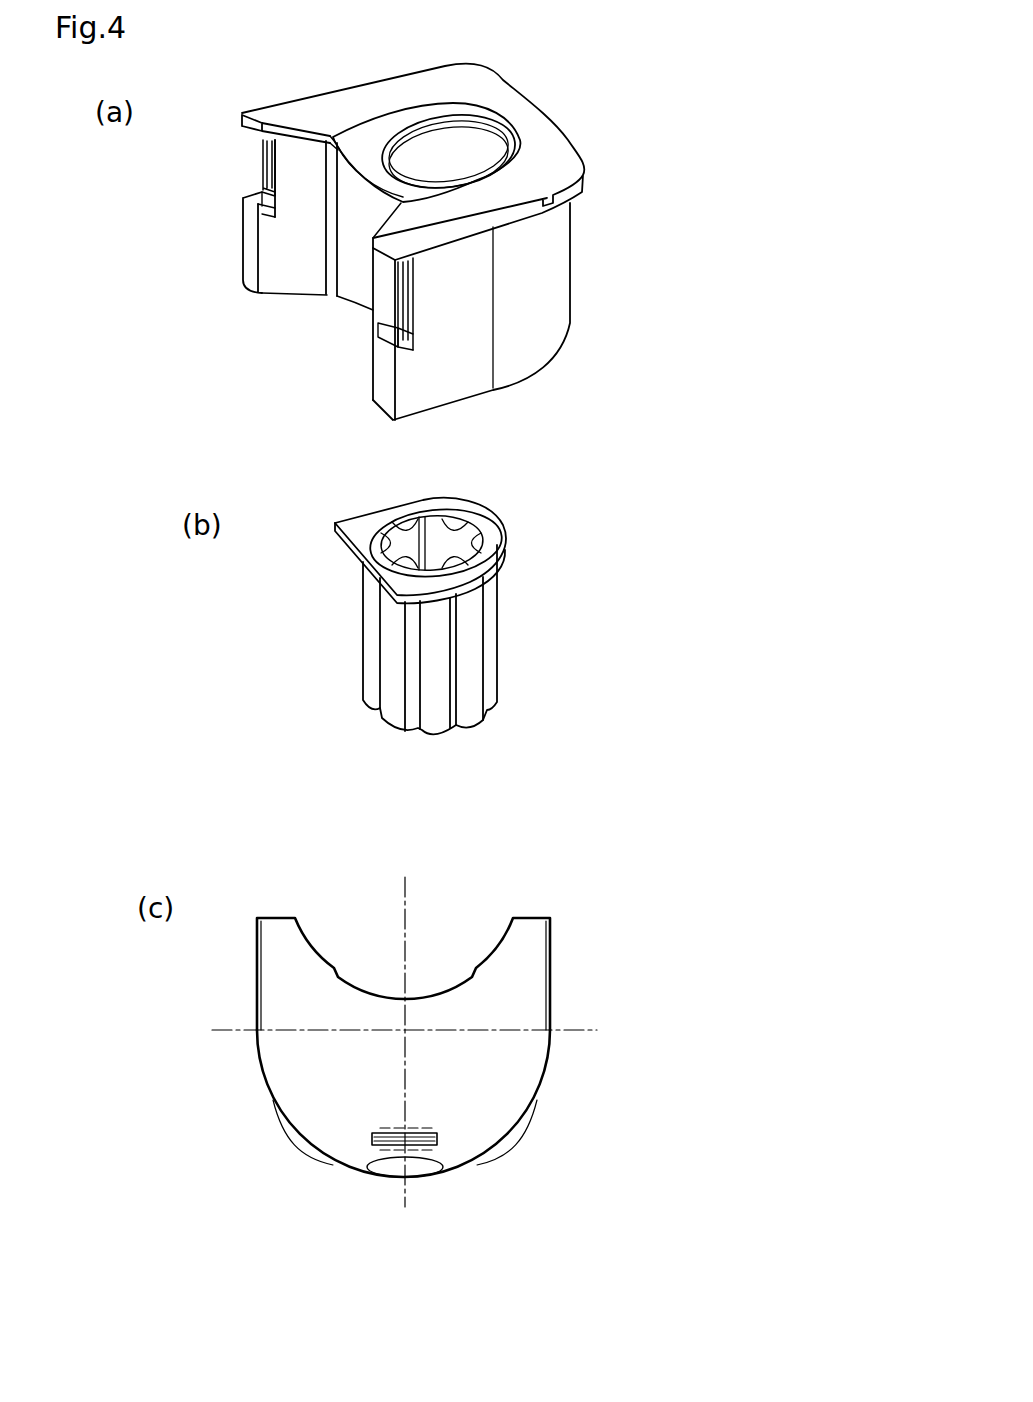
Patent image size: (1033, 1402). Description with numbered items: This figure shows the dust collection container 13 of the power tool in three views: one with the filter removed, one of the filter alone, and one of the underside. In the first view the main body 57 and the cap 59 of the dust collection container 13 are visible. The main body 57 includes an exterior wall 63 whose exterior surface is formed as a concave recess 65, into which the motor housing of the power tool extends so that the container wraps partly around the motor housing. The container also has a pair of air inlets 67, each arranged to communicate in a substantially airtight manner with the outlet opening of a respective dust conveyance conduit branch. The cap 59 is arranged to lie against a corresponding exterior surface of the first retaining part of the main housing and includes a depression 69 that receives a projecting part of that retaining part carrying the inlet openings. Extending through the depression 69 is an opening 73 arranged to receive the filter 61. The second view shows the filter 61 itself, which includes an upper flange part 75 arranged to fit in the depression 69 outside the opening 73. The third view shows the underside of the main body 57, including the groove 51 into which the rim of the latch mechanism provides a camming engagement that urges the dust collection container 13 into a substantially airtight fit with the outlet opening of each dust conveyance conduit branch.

The dust collection container 13 is at (676, 136).
The groove 51 is at (417, 1137).
The main body 57 is at (553, 287).
The cap 59 is at (497, 90).
The filter 61 is at (487, 627).
The exterior wall 63 is at (255, 255).
The concave recess 65 is at (358, 270).
The air inlets 67 is at (267, 170).
The depression 69 is at (367, 150).
The opening 73 is at (433, 163).
The upper flange part 75 is at (357, 532).